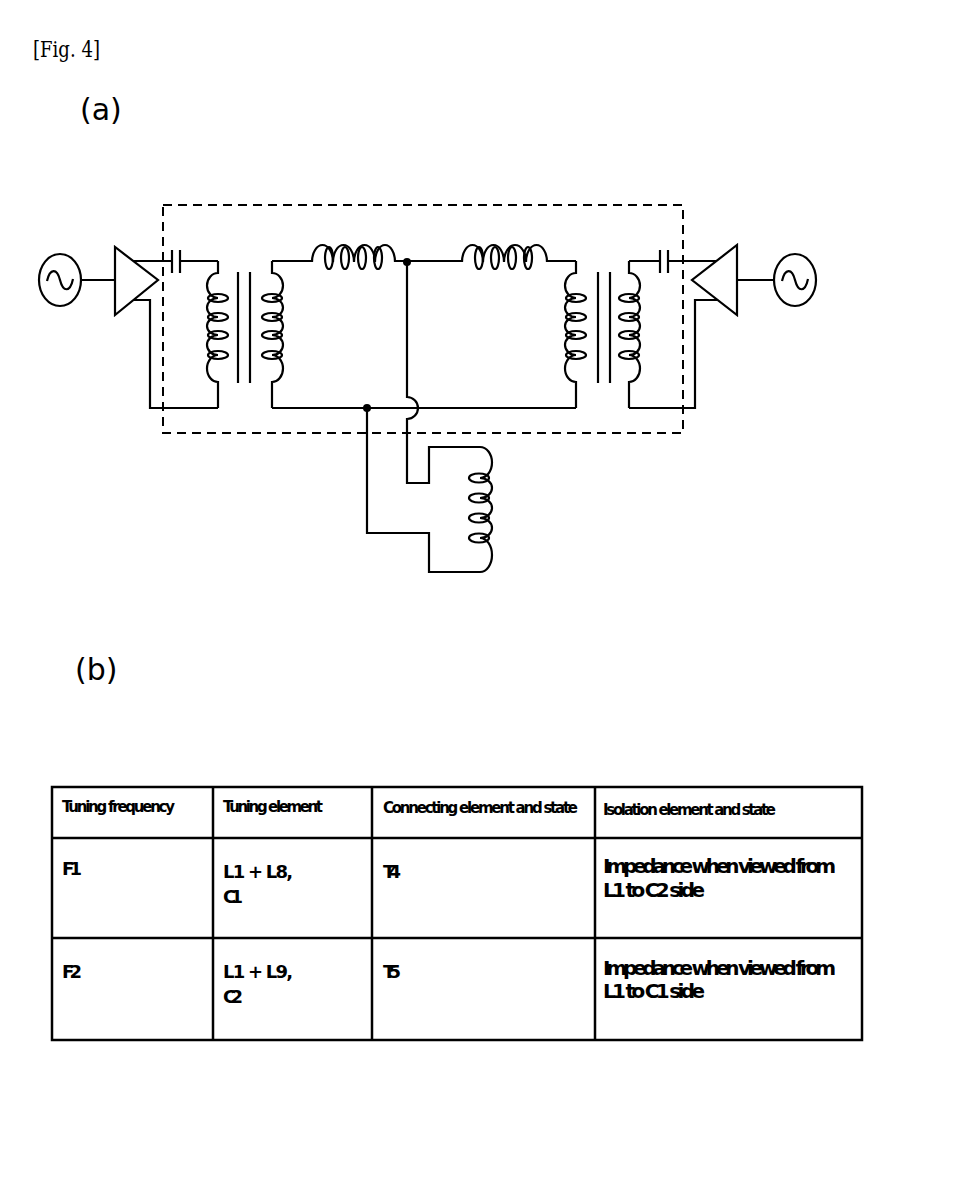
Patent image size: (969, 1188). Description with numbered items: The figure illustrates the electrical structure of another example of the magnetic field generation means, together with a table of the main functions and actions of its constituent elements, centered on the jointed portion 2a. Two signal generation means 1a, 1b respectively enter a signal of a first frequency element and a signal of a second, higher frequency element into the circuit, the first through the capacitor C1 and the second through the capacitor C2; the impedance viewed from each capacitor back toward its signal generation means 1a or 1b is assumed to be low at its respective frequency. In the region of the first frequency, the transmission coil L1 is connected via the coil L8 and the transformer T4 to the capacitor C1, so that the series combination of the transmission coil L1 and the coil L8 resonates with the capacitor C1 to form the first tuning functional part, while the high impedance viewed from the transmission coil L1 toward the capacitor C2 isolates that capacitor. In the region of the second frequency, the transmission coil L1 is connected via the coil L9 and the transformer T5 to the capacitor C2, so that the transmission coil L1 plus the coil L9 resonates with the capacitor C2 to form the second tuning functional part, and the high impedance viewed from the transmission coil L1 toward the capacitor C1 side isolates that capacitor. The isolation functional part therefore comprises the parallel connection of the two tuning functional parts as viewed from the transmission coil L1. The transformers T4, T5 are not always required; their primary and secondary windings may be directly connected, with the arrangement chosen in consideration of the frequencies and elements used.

The signal generation means 1a is at (100, 286).
The signal generation means 1b is at (757, 286).
The jointed portion 2a is at (162, 421).
The capacitor C1 is at (193, 244).
The capacitor C2 is at (655, 244).
The transformer T4 is at (245, 317).
The transformer T5 is at (602, 317).
The coil L8 is at (353, 276).
The coil L9 is at (504, 276).
The transmission coil L1 is at (499, 509).